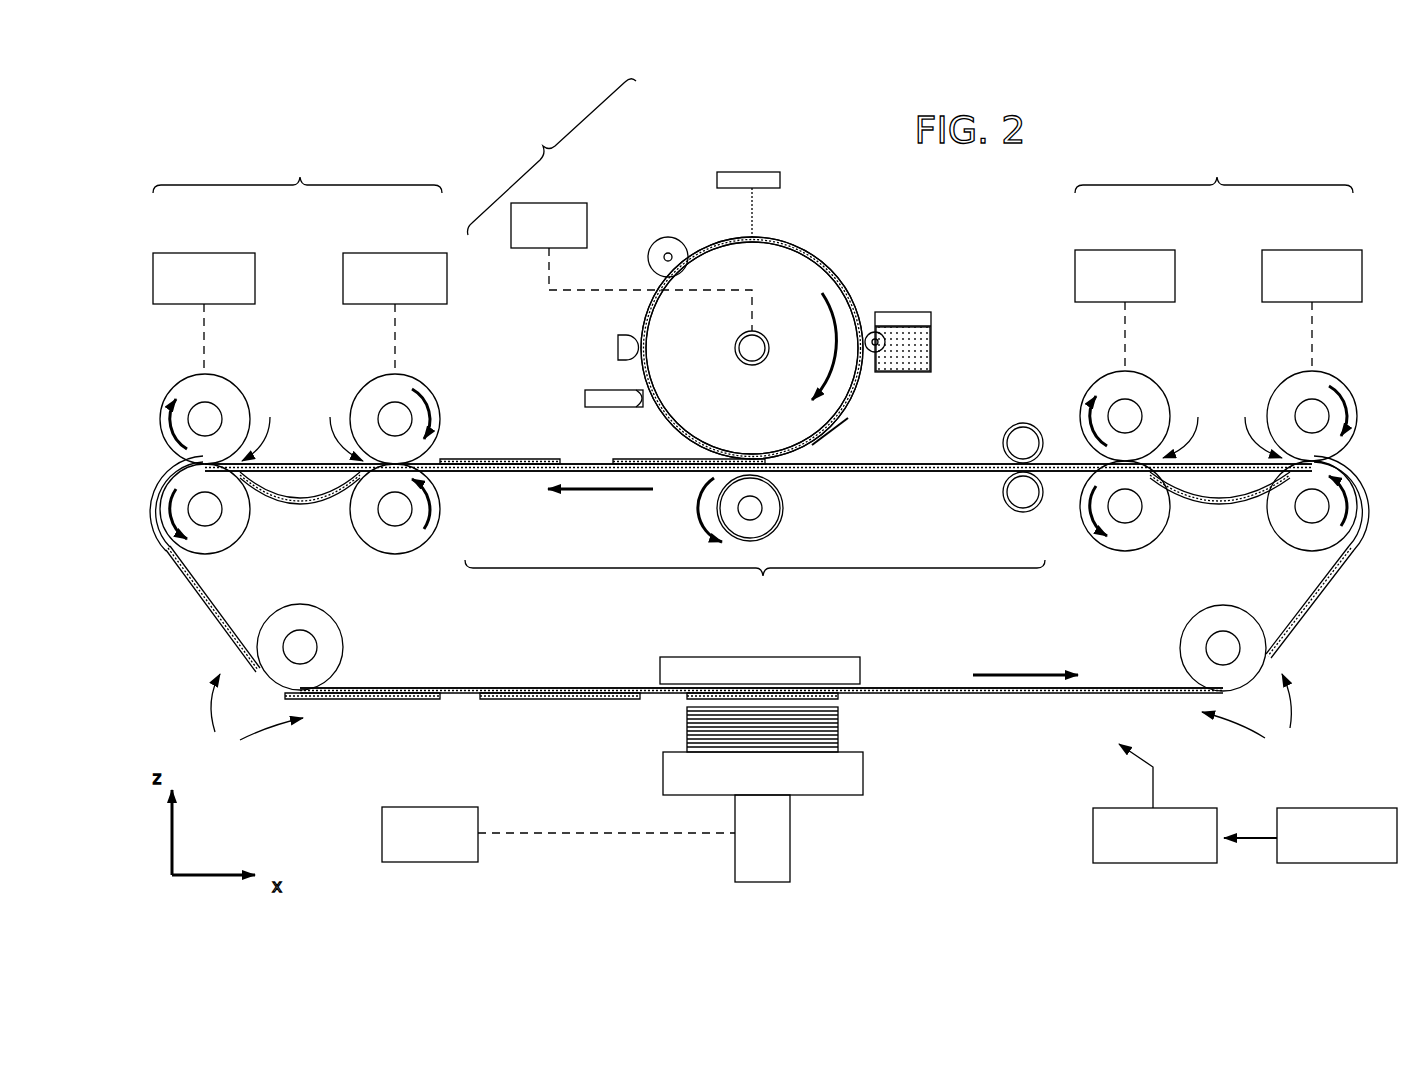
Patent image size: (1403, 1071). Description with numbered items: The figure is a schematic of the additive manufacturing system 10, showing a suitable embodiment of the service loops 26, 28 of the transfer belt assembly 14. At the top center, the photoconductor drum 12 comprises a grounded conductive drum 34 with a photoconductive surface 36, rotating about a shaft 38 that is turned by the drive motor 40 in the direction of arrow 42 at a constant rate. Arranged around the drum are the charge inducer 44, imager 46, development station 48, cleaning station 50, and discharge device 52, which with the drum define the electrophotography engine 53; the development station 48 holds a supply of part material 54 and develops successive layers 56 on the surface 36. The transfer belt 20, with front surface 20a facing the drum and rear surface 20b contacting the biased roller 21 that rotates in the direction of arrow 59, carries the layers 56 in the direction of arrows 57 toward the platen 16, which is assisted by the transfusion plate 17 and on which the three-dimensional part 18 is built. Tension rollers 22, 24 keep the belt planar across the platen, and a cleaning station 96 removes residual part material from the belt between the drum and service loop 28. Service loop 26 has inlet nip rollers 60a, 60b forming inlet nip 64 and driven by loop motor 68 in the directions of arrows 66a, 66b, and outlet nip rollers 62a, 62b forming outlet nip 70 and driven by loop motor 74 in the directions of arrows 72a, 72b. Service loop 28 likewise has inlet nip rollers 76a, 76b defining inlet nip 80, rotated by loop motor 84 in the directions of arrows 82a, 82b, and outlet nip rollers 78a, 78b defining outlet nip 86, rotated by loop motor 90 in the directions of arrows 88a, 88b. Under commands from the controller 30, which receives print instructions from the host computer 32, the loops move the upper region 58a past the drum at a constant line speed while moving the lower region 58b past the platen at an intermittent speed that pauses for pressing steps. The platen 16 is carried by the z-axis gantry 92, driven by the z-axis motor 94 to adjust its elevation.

The additive manufacturing system 10 is at (260, 132).
The photoconductor drum 12 is at (847, 262).
The transfer belt assembly 14 is at (1357, 662).
The platen 16 is at (663, 771).
The transfusion plate 17 is at (860, 663).
The 3D part 18 is at (840, 719).
The transfer belt 20 is at (858, 478).
The front surface 20a is at (930, 466).
The rear surface 20b is at (930, 469).
The biased roller 21 is at (778, 500).
The tension roller 22 is at (343, 636).
The tension roller 24 is at (1180, 632).
The service loop 26 is at (297, 171).
The service loop 28 is at (1214, 171).
The controller 30 is at (1093, 833).
The host computer 32 is at (1325, 808).
The conductive drum 34 is at (736, 419).
The photoconductive surface 36 is at (786, 243).
The shaft 38 is at (738, 352).
The drive motor 40 is at (545, 203).
The arrow 42 is at (836, 332).
The charge inducer 44 is at (668, 237).
The imager 46 is at (717, 178).
The development station 48 is at (934, 318).
The cleaning station 50 is at (595, 400).
The discharge device 52 is at (618, 346).
The electrophotography (EP) engine 53 is at (552, 157).
The part material 54 is at (925, 358).
The successive layers 56 is at (175, 476).
The arrows 57 is at (595, 490).
The upper region 58a is at (755, 581).
The lower region 58b is at (754, 713).
The arrow 59 is at (712, 493).
The inlet nip roller 60a is at (420, 385).
The inlet nip roller 60b is at (398, 555).
The outlet nip roller 62a is at (228, 385).
The outlet nip roller 62b is at (240, 545).
The inlet nip 64 is at (340, 427).
The arrow 66a is at (432, 417).
The arrow 66b is at (432, 516).
The loop motor 68 is at (371, 253).
The outlet nip 70 is at (261, 427).
The arrow 72a is at (178, 425).
The arrow 72b is at (178, 510).
The loop motor 74 is at (178, 253).
The inlet nip roller 76a is at (1282, 395).
The inlet nip roller 76b is at (1290, 541).
The outlet nip roller 78a is at (1150, 385).
The outlet nip roller 78b is at (1165, 540).
The inlet nip 80 is at (1257, 426).
The arrow 82a is at (1343, 400).
The arrow 82b is at (1352, 532).
The loop motor 84 is at (1296, 250).
The outlet nip 86 is at (1186, 426).
The arrow 88a is at (1098, 425).
The arrow 88b is at (1095, 520).
The loop motor 90 is at (1101, 250).
The z-axis gantry 92 is at (790, 823).
The z-axis motor 94 is at (433, 807).
The cleaning station 96 is at (1012, 514).